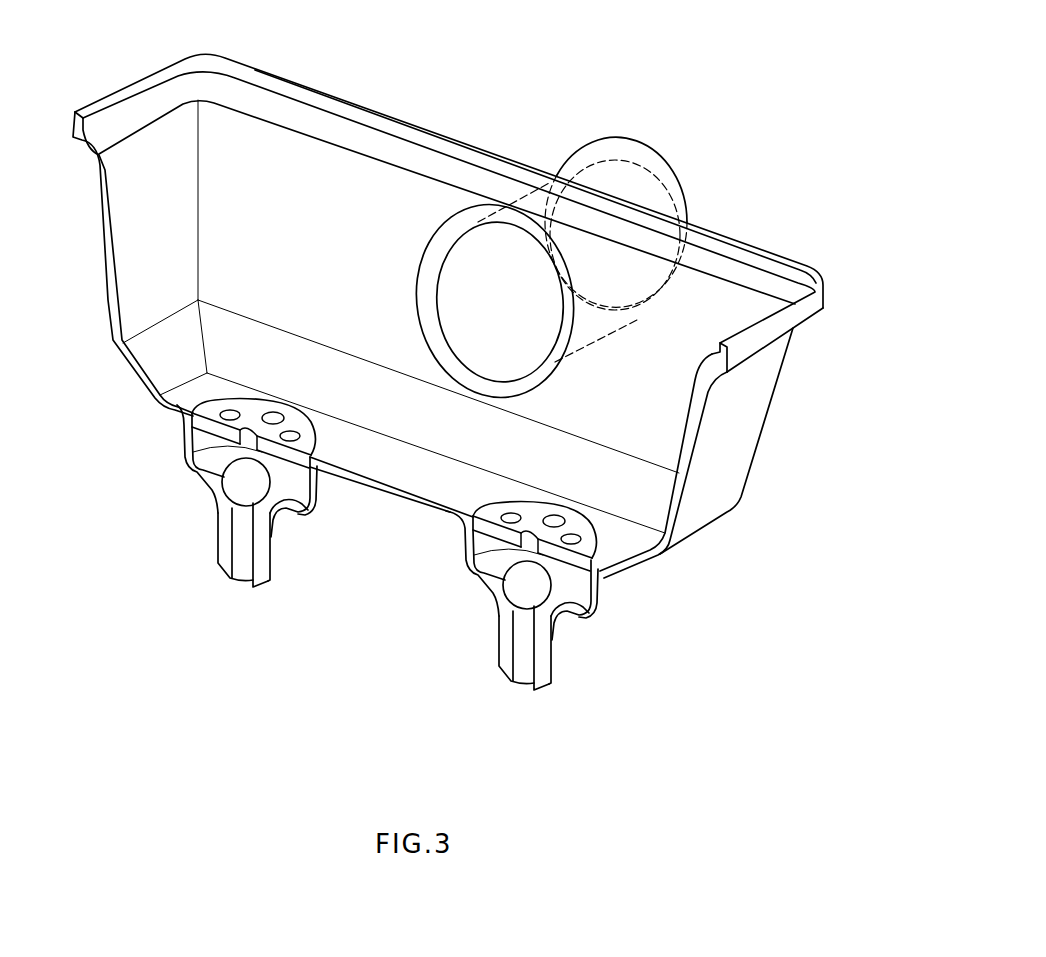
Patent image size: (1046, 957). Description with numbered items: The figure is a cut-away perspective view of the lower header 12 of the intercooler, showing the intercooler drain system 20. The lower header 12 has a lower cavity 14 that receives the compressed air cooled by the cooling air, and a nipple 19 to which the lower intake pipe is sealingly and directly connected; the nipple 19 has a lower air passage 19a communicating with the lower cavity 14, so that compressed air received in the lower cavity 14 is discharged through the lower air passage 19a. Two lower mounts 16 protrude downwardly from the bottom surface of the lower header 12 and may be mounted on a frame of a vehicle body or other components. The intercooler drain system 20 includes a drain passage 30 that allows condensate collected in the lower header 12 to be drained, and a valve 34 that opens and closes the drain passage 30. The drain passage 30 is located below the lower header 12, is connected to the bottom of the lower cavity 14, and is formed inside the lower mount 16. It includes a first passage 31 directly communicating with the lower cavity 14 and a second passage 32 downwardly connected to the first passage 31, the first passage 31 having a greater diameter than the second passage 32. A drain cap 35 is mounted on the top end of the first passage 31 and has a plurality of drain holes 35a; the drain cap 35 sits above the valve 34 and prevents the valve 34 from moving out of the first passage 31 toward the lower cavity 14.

The lower header 12 is at (448, 316).
The lower cavity 14 is at (292, 235).
The lower mount 16 is at (270, 572).
The nipple 19 is at (515, 204).
The lower air passage 19a is at (519, 282).
The intercooler drain system 20 is at (209, 521).
The drain passage 30 is at (209, 496).
The first passage 31 is at (210, 460).
The second passage 32 is at (240, 535).
The valve 34 is at (249, 493).
The drain cap 35 is at (411, 508).
The drain holes 35a is at (318, 462).